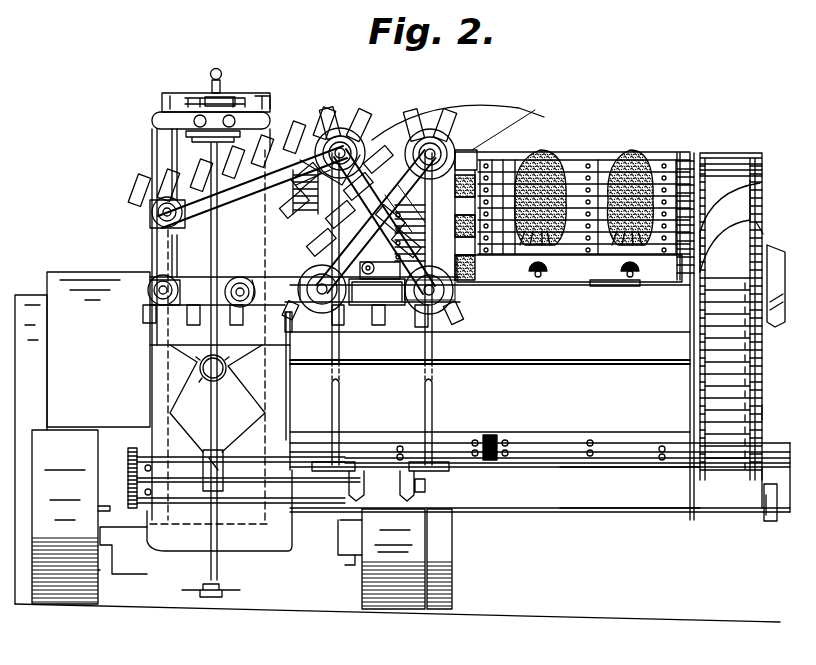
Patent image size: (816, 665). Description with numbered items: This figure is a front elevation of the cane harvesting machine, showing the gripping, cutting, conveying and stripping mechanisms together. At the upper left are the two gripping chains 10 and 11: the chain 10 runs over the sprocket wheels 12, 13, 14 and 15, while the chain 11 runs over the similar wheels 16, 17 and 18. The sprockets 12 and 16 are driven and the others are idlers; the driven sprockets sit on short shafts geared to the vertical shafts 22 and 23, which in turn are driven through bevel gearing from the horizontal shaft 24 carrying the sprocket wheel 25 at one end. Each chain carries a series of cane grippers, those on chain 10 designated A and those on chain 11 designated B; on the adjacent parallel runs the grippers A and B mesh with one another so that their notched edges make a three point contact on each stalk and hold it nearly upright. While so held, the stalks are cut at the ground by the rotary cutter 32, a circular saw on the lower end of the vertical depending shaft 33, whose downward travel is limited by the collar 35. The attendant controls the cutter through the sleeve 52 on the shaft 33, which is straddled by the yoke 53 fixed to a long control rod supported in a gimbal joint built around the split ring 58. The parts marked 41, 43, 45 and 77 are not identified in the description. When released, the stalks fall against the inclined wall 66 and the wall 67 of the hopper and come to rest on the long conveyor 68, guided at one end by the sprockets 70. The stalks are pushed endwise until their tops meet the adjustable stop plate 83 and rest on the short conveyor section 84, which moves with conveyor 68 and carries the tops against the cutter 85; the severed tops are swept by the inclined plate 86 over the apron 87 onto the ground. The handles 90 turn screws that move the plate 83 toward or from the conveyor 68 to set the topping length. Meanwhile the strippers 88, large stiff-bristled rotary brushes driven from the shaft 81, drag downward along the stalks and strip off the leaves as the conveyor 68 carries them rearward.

The chain 10 is at (344, 132).
The chain 11 is at (409, 132).
The sprocket wheel 12 is at (324, 140).
The sprocket wheel 13 is at (150, 213).
The sprocket wheel 14 is at (150, 294).
The sprocket wheel 15 is at (235, 284).
The sprocket wheel 16 is at (432, 132).
The sprocket wheel 17 is at (463, 297).
The sprocket wheel 18 is at (312, 300).
The vertical shaft 22 is at (365, 402).
The vertical shaft 23 is at (429, 404).
The horizontal shaft 24 is at (305, 482).
The sprocket wheel 25 is at (128, 480).
The rotary cutter 32 is at (187, 591).
The vertical depending shaft 33 is at (222, 98).
The collar 35 is at (221, 78).
The cross head 41 is at (155, 125).
The bracket 43 is at (190, 90).
The guide 45 is at (272, 101).
The sleeve 52 is at (220, 480).
The yoke 53 is at (198, 452).
The split ring 58 is at (222, 380).
The inclined wall 66 is at (487, 377).
The wall 67 is at (490, 396).
The conveyor 68 is at (656, 153).
The sprocket 70 is at (482, 525).
The support 77 is at (592, 462).
The shaft 81 is at (597, 272).
The stop plate 83 is at (762, 412).
The conveyor section 84 is at (724, 153).
The cutter 85 is at (763, 233).
The inclined plate 86 is at (730, 226).
The apron 87 is at (778, 322).
The strippers 88 is at (611, 140).
The handle 90 is at (773, 521).
The cane grippers A is at (140, 187).
The cane grippers B is at (472, 157).